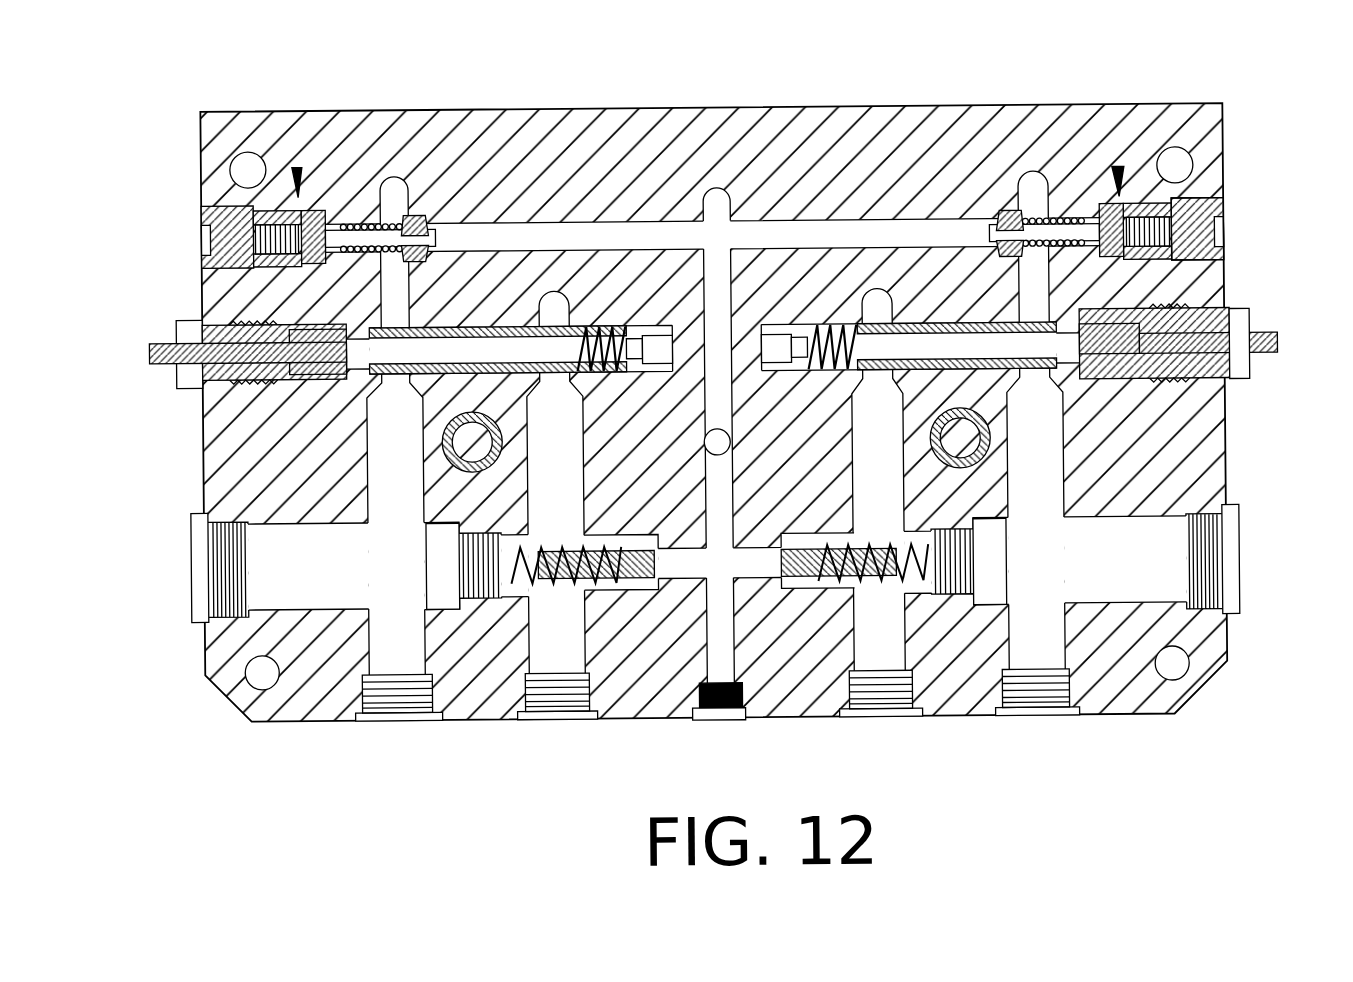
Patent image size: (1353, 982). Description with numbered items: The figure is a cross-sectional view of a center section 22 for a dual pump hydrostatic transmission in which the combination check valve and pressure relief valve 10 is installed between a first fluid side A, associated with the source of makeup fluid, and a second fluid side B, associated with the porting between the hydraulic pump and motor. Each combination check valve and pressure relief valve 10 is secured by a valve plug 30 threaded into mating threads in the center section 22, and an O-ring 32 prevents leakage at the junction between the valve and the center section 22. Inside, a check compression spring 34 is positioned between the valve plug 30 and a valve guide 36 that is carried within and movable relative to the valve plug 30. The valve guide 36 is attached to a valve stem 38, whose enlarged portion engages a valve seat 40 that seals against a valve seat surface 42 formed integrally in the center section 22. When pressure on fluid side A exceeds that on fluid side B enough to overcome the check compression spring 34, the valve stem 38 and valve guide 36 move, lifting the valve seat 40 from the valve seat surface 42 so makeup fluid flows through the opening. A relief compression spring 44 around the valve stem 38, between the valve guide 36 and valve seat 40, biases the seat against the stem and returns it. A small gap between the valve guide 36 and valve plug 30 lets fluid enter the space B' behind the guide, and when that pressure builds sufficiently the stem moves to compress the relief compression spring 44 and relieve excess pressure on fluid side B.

The combination check valve and pressure relief valve 10 is at (300, 160).
The center section 22 is at (1225, 648).
The valve plug 30 is at (203, 258).
The O-ring 32 is at (1160, 204).
The check compression spring 34 is at (230, 224).
The valve guide 36 is at (330, 210).
The valve stem 38 is at (1103, 223).
The valve seat 40 is at (437, 226).
The valve seat surface 42 is at (1007, 220).
The relief compression spring 44 is at (1127, 206).
The first fluid side A is at (517, 237).
The second fluid side B is at (704, 220).
The space behind the valve guide B' is at (1189, 150).